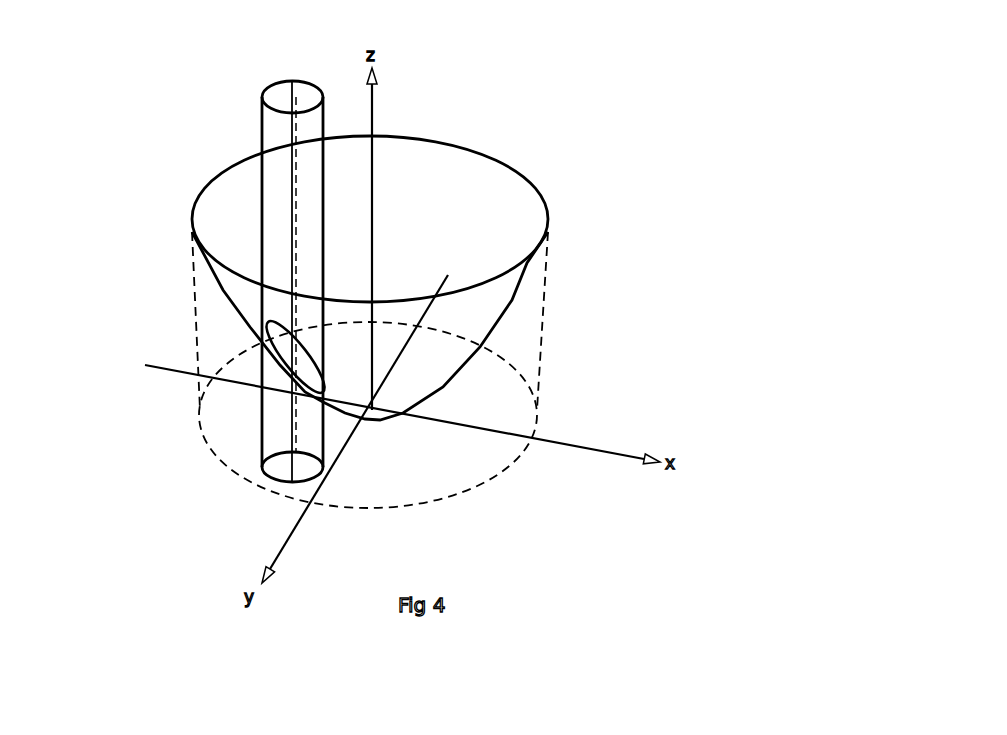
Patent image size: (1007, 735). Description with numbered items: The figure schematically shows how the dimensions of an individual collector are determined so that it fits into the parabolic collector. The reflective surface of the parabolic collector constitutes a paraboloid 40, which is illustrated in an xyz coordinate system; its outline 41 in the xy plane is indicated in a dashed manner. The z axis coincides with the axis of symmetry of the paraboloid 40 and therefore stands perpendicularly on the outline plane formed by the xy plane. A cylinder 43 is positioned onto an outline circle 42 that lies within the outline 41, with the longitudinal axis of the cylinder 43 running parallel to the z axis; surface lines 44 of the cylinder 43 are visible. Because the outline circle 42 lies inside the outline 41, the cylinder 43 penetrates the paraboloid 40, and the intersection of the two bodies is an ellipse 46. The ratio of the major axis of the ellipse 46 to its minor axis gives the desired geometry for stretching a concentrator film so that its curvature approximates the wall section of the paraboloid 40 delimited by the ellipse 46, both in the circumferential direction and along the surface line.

The paraboloid 40 is at (543, 132).
The outline 41 is at (253, 357).
The outline circle 42 is at (270, 478).
The cylinder 43 is at (250, 100).
The surface lines 44 is at (262, 135).
The ellipse 46 is at (300, 346).